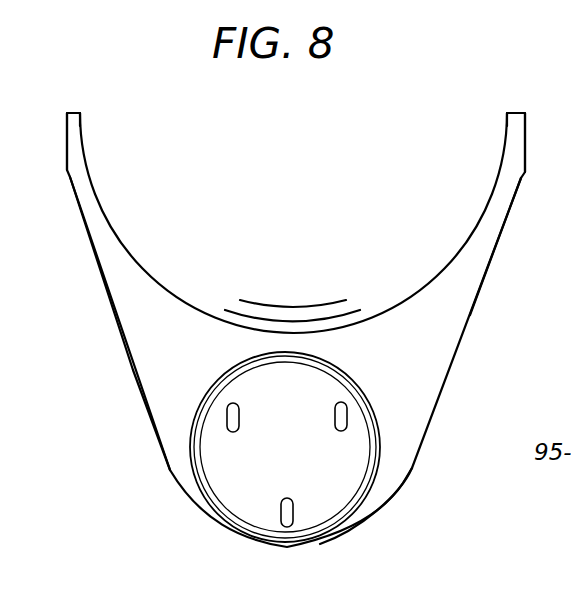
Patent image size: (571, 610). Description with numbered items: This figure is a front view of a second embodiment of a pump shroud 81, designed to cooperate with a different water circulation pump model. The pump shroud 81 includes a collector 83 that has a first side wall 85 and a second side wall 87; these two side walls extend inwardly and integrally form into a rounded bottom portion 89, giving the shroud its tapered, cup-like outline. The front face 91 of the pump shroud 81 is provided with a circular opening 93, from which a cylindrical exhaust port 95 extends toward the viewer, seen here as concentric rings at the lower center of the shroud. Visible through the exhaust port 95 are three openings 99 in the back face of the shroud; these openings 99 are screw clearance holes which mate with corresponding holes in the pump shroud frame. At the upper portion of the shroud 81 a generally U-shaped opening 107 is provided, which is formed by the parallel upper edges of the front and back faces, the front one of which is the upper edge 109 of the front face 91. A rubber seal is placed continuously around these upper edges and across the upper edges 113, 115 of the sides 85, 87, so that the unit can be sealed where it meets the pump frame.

The pump shroud 81 is at (86, 308).
The collector 83 is at (470, 292).
The first side wall 85 is at (461, 350).
The second side wall 87 is at (133, 370).
The rounded bottom portion 89 is at (390, 482).
The front face 91 is at (170, 413).
The circular opening 93 is at (238, 470).
The cylindrical exhaust port 95 is at (377, 428).
The openings 99 is at (334, 421).
The U-shaped opening 107 is at (301, 183).
The upper edge of front face 109 is at (268, 334).
The upper edge of first side 113 is at (81, 124).
The upper edge of second side 115 is at (507, 116).